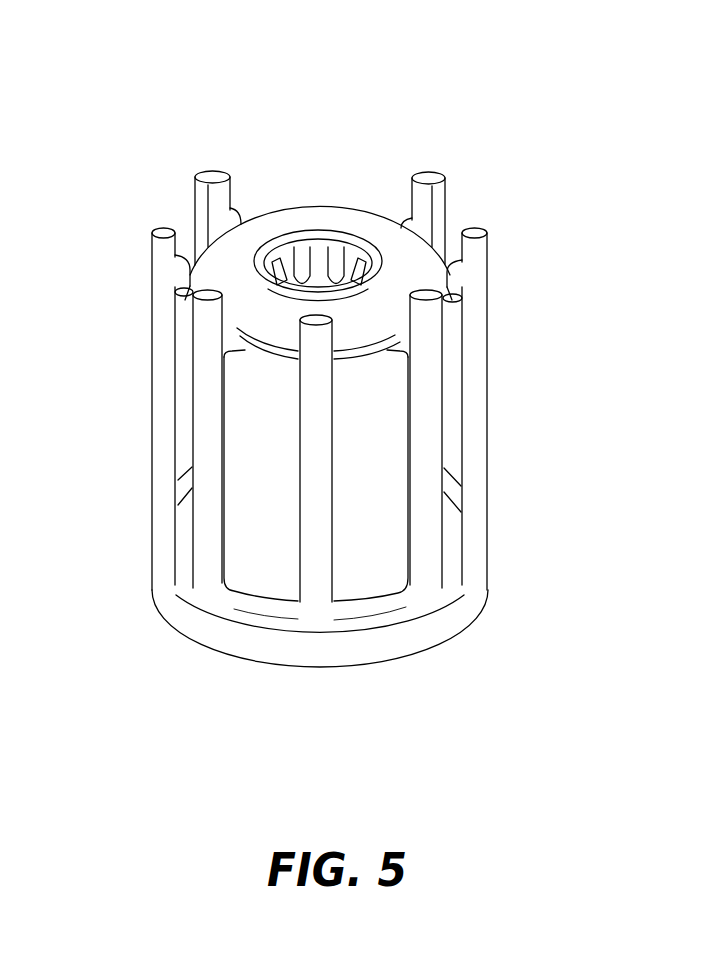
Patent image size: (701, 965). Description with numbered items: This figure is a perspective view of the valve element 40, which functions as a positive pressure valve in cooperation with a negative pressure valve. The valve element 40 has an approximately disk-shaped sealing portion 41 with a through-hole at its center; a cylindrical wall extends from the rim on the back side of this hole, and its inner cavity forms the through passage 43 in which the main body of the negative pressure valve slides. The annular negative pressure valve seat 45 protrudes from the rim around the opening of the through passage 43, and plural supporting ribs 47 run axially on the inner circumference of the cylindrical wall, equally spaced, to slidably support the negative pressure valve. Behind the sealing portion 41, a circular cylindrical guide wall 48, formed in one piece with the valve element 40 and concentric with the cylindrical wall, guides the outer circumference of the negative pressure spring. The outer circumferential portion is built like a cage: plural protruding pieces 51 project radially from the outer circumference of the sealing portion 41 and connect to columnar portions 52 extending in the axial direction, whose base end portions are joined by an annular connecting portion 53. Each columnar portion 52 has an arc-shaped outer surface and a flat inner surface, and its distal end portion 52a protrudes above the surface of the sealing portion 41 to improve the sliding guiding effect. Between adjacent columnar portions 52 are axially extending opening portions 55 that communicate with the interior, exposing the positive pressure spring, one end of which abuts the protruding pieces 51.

The valve element 40 is at (341, 136).
The sealing portion 41 is at (416, 248).
The through passage 43 is at (319, 258).
The negative pressure valve seat 45 is at (281, 238).
The supporting ribs 47 is at (301, 248).
The guide wall 48 is at (385, 452).
The protruding pieces 51 is at (183, 290).
The columnar portions 52 is at (157, 433).
The distal end portions 52a is at (199, 197).
The connecting portion 53 is at (297, 655).
The opening portions 55 is at (453, 372).